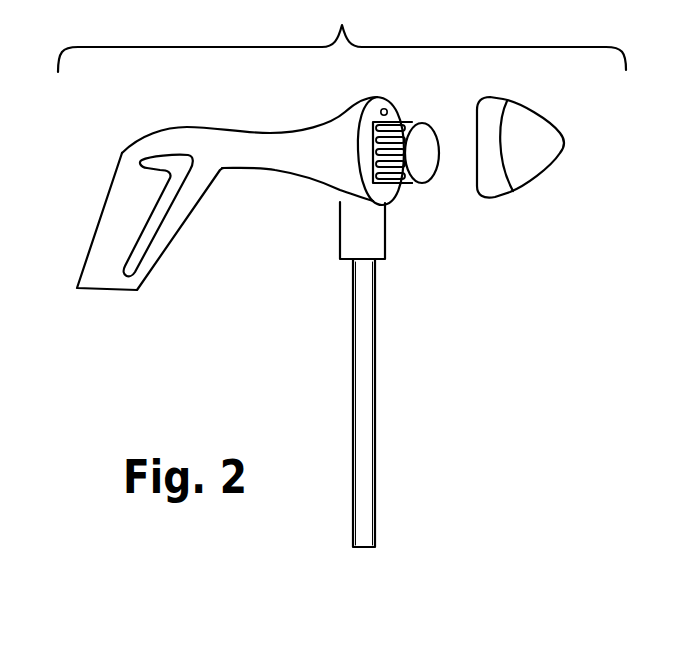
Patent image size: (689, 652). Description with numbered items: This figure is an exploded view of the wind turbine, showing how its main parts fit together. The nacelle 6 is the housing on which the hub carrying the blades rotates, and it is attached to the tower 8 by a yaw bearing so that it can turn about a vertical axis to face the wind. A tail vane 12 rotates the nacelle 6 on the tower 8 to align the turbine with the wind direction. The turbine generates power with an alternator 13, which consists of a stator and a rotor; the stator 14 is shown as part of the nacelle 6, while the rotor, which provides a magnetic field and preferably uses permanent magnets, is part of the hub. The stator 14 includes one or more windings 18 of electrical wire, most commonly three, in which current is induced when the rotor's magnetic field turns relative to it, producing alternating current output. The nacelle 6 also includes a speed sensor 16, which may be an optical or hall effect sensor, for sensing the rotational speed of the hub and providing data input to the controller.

The nacelle 6 is at (301, 145).
The tower 8 is at (366, 436).
The tail vane 12 is at (110, 245).
The alternator 13 is at (458, 193).
The stator 14 is at (425, 140).
The speed sensor 16 is at (388, 102).
The windings 18 is at (405, 186).